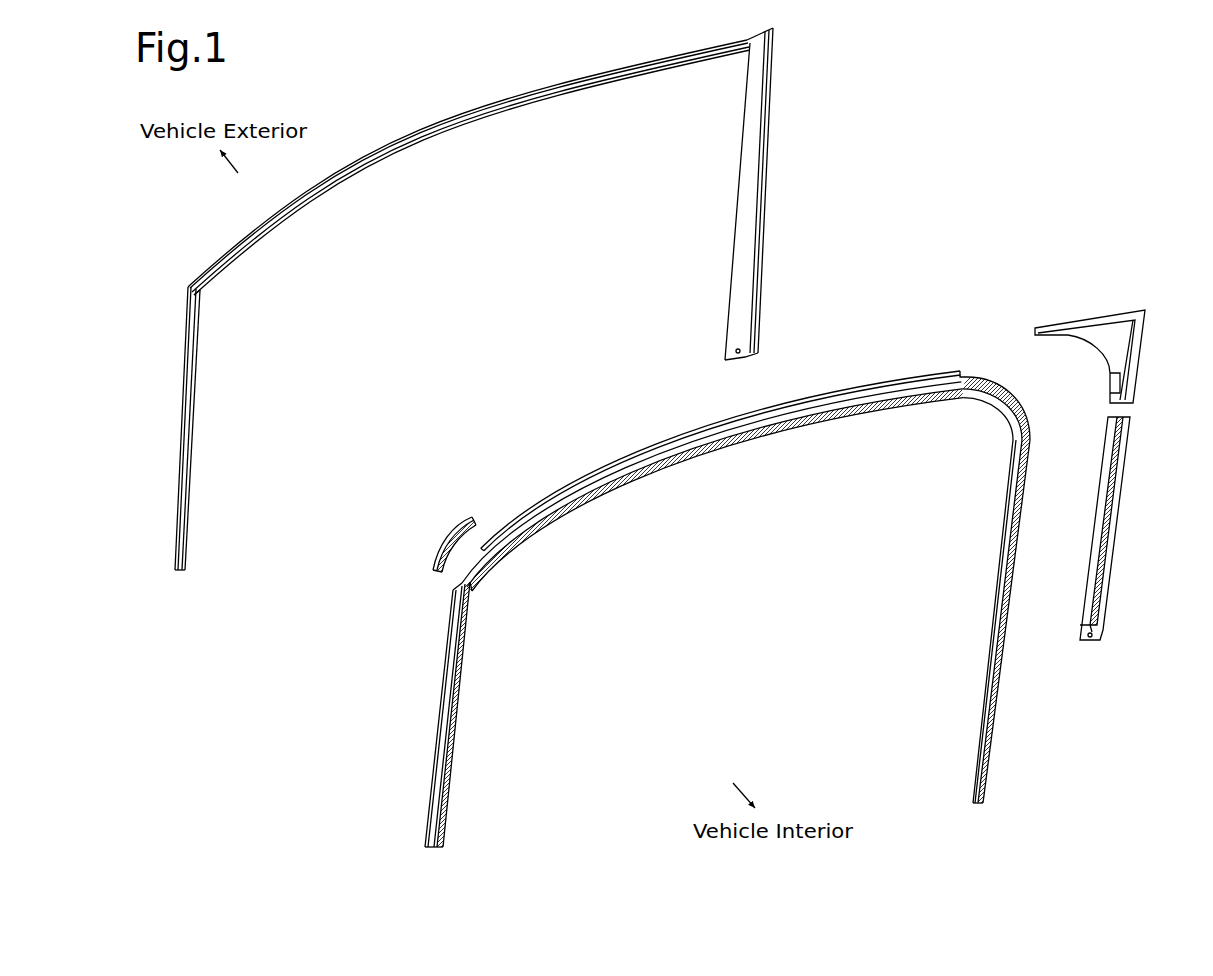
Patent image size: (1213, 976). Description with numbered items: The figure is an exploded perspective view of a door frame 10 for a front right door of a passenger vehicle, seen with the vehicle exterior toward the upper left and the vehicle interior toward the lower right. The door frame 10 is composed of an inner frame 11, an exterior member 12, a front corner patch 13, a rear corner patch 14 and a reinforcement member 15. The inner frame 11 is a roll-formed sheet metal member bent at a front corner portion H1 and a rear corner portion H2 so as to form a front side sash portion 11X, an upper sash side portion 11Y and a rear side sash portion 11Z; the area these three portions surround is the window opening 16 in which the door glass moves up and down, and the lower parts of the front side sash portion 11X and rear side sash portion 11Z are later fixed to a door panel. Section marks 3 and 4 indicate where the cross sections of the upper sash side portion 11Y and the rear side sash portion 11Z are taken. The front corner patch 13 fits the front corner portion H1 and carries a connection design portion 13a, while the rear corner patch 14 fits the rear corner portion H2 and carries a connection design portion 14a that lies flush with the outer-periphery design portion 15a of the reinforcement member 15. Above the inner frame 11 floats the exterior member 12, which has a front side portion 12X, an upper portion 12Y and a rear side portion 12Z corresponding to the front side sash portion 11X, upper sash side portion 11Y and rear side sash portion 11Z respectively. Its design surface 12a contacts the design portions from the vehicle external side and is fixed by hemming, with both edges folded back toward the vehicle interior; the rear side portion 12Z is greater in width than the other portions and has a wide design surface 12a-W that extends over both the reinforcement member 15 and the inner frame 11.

The door frame 10 is at (963, 188).
The inner frame 11 is at (914, 357).
The front side sash portion 11X is at (452, 730).
The upper sash side portion 11Y is at (757, 438).
The rear side sash portion 11Z is at (998, 692).
The exterior member 12 is at (451, 87).
The design surface 12a is at (500, 108).
The wide design surface 12a-W is at (753, 253).
The front side portion 12X is at (195, 410).
The upper portion 12Y is at (380, 165).
The rear side portion 12Z is at (768, 187).
The front corner patch 13 is at (447, 530).
The connection design portion 13a is at (433, 543).
The rear corner patch 14 is at (1090, 313).
The connection design portion 14a is at (1135, 353).
The reinforcement member 15 is at (1107, 517).
The outer-periphery design portion 15a is at (1123, 480).
The window opening 16 is at (977, 762).
The front corner portion H1 is at (480, 577).
The rear corner portion H2 is at (1003, 397).
The section line for FIG. 3 is at (532, 462).
The section line for FIG. 4 is at (990, 547).